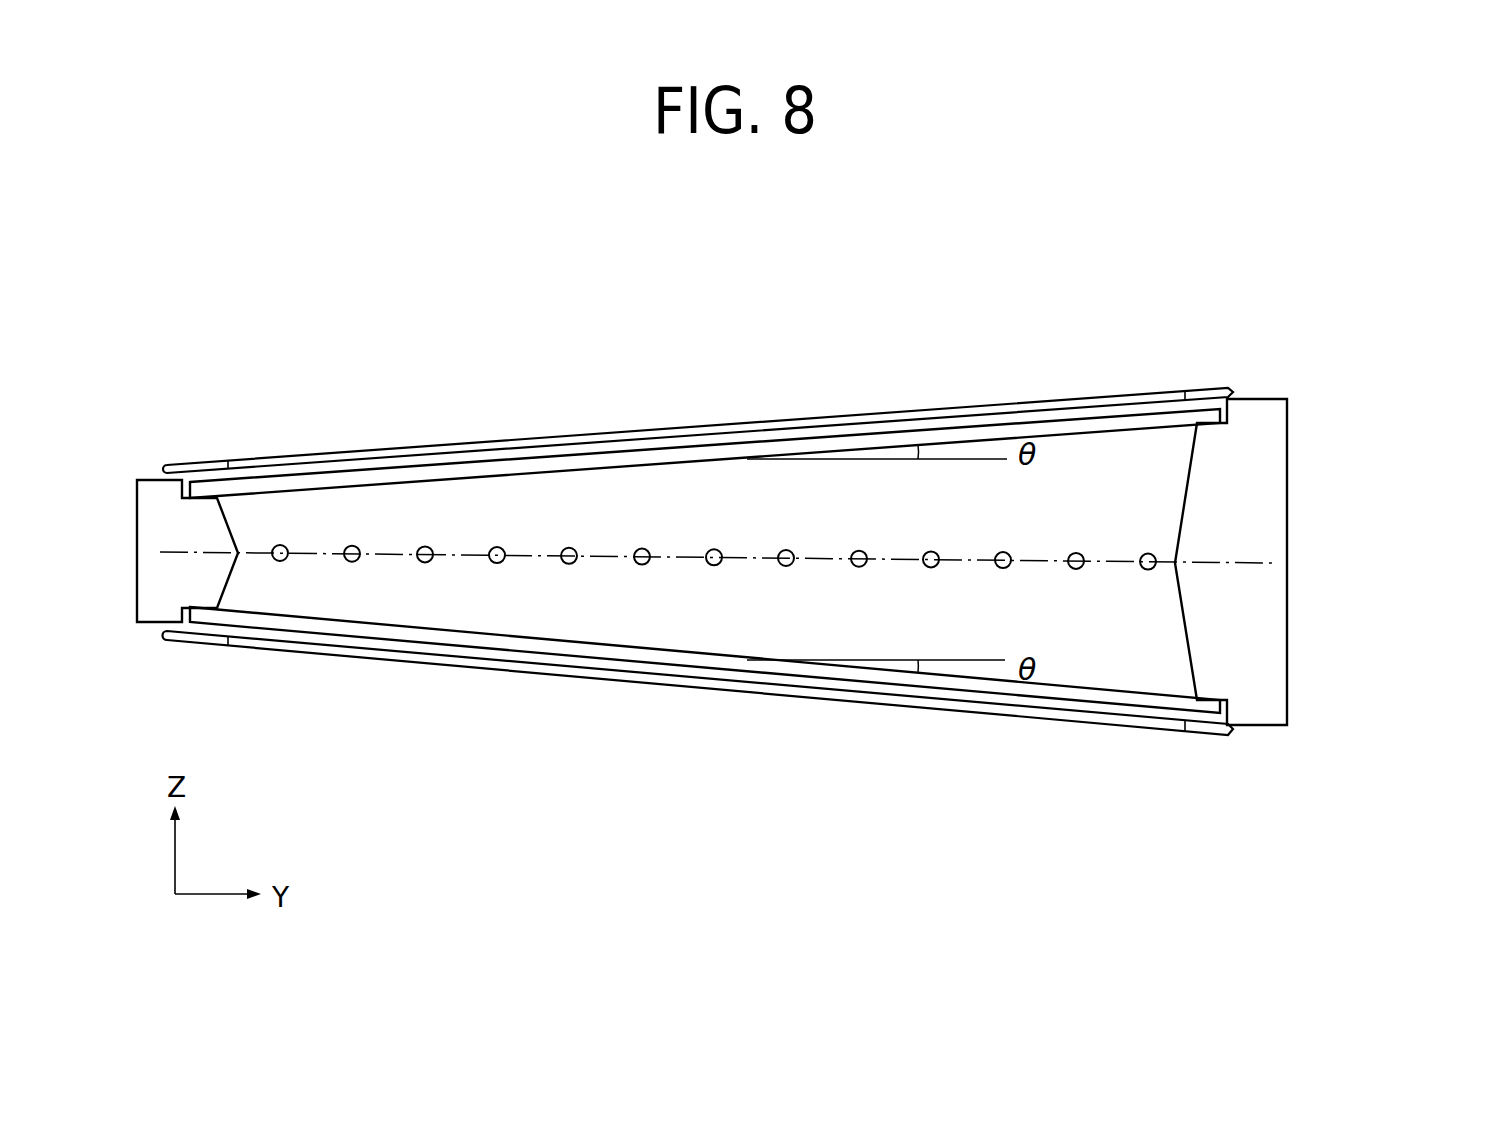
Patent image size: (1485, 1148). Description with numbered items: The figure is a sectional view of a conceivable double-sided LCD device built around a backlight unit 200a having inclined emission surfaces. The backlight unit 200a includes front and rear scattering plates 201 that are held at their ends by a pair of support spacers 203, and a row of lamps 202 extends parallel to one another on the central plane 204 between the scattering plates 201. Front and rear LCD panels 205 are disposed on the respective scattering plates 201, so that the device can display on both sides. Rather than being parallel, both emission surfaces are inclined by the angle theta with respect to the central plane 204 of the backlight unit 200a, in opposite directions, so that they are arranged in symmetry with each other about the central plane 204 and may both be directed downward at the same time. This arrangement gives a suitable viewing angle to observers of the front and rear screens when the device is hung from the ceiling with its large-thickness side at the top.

The backlight unit 200a is at (1314, 427).
The scattering plates 201 is at (828, 437).
The lamps 202 is at (643, 548).
The support spacers 203 is at (153, 478).
The central plane 204 is at (1245, 561).
The LCD panels 205 is at (445, 442).